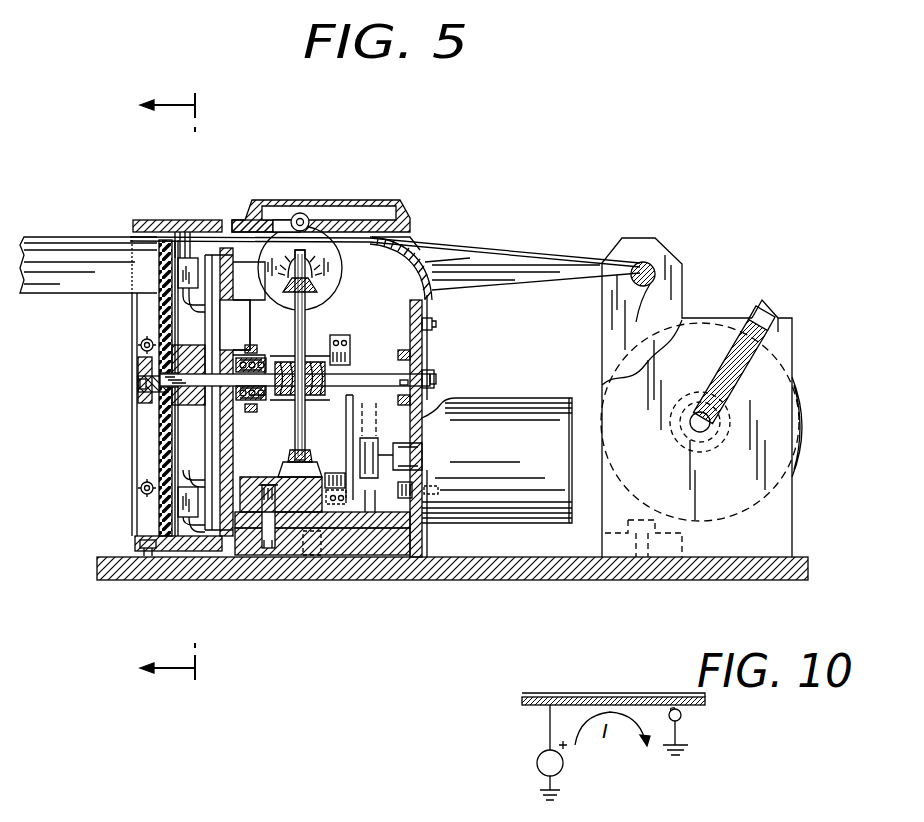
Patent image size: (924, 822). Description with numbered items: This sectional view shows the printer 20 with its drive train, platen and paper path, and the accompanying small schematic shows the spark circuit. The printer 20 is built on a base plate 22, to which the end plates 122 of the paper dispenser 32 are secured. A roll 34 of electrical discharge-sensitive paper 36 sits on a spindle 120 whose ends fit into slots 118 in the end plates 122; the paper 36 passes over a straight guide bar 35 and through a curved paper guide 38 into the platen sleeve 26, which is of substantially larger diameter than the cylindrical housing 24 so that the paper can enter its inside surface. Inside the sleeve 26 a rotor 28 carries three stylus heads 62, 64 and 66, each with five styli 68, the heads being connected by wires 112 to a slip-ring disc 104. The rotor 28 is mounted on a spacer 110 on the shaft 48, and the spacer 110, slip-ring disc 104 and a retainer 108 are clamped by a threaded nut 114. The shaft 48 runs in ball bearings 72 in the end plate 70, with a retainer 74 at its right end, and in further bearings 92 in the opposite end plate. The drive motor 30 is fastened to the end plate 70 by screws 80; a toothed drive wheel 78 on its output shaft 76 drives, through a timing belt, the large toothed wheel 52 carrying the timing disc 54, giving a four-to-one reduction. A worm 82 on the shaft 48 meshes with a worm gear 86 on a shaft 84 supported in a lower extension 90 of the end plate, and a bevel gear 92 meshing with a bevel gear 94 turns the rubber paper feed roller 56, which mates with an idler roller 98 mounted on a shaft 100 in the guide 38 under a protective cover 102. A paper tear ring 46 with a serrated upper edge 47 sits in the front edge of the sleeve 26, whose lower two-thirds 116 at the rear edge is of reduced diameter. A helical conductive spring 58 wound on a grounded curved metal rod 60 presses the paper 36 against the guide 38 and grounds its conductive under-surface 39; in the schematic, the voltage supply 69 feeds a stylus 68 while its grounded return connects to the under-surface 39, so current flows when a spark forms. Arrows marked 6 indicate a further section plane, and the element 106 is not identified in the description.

In FIG. 5, the section line 6- 6 is at (151, 384).
In FIG. 5, the printer 20 is at (608, 162).
In FIG. 5, the base plate 22 is at (490, 570).
In FIG. 5, the cylindrical housing 24 is at (335, 520).
In FIG. 5, the cylindrical sleeve 26 is at (150, 220).
In FIG. 5, the rotor 28 is at (170, 495).
In FIG. 5, the drive motor 30 is at (535, 450).
In FIG. 5, the dispenser 32 is at (812, 368).
In FIG. 5, the roll 34 is at (762, 318).
In FIG. 5, the straight guide bar 35 is at (655, 269).
In FIG. 5, the electrical discharge-sensitive paper 36 is at (72, 237).
In FIG. 10, the electrical discharge-sensitive paper 36 is at (610, 694).
In FIG. 5, the curved paper guide 38 is at (418, 238).
In FIG. 10, the conductive under-surface 39 is at (570, 694).
In FIG. 5, the paper tear ring 46 is at (132, 339).
In FIG. 5, the serrated upper edge 47 is at (132, 296).
In FIG. 5, the shaft 48 is at (340, 388).
In FIG. 5, the large toothed wheel 52 is at (418, 346).
In FIG. 5, the timing disc 54 is at (352, 428).
In FIG. 5, the paper feed roller 56 is at (283, 250).
In FIG. 5, the helical conductive spring 58 is at (405, 248).
In FIG. 10, the helical conductive spring 58 is at (681, 718).
In FIG. 5, the curved metal rod 60 is at (445, 265).
In FIG. 5, the stylus head 62 is at (176, 270).
In FIG. 5, the stylus head 64 is at (170, 505).
In FIG. 5, the stylus head 66 is at (178, 456).
In FIG. 5, the styli 68 is at (180, 232).
In FIG. 10, the styli 68 is at (548, 735).
In FIG. 10, the voltage supply 69 is at (538, 772).
In FIG. 5, the end plate 70 is at (432, 323).
In FIG. 5, the ball bearings 72 is at (428, 366).
In FIG. 5, the retainer 74 is at (436, 386).
In FIG. 5, the output shaft 76 is at (390, 465).
In FIG. 5, the toothed drive wheel 78 is at (370, 480).
In FIG. 5, the screws 80 is at (400, 525).
In FIG. 5, the worm 82 is at (293, 358).
In FIG. 5, the shaft 84 is at (303, 445).
In FIG. 5, the worm gear 86 is at (283, 345).
In FIG. 5, the lower extension 90 is at (292, 498).
In FIG. 5, the bevel gear 92 is at (315, 290).
In FIG. 5, the bevel gear 94 is at (312, 282).
In FIG. 5, the idler roller 98 is at (308, 220).
In FIG. 5, the shaft 100 is at (298, 218).
In FIG. 5, the cover 102 is at (405, 202).
In FIG. 5, the slip-ring disc 104 is at (200, 262).
In FIG. 5, the support plate 106 is at (225, 360).
In FIG. 5, the retainer 108 is at (160, 371).
In FIG. 5, the spacer 110 is at (165, 418).
In FIG. 5, the wires 112 is at (178, 287).
In FIG. 5, the threaded nut 114 is at (140, 404).
In FIG. 5, the lower two-thirds of the rear edge 116 is at (135, 535).
In FIG. 5, the slots 118 is at (778, 322).
In FIG. 5, the spindle 120 is at (704, 440).
In FIG. 5, the end plates 122 is at (600, 302).